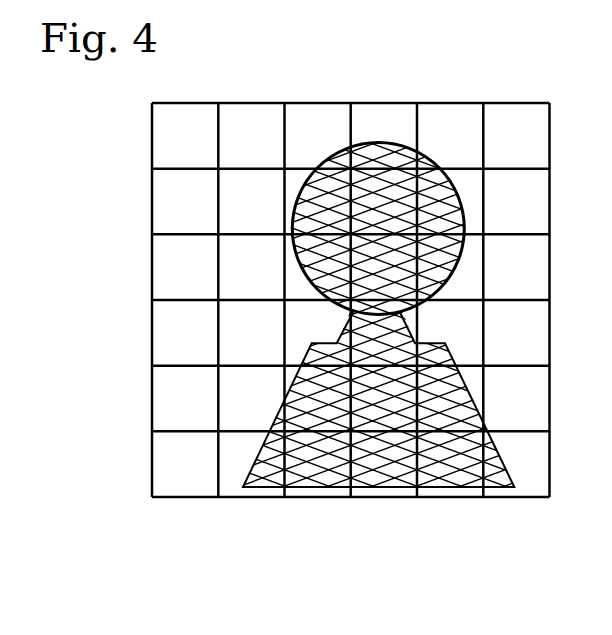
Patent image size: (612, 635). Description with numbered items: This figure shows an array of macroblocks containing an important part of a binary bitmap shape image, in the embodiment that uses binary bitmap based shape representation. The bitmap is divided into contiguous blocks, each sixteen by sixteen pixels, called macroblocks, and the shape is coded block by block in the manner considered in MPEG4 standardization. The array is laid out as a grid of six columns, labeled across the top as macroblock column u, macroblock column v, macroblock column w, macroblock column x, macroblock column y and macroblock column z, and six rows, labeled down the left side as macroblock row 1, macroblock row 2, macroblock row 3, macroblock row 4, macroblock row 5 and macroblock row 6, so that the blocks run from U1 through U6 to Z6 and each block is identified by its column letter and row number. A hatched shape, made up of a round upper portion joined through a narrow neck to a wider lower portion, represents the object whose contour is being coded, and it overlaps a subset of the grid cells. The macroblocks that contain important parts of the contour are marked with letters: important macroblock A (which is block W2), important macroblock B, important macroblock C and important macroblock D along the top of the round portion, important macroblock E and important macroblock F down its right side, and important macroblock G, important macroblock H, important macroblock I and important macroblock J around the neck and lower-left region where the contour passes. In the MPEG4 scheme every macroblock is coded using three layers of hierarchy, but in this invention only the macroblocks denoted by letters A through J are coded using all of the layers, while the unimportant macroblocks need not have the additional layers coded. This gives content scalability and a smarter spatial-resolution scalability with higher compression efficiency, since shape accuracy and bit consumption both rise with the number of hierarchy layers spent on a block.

The macroblock column u is at (185, 84).
The macroblock column v is at (252, 84).
The macroblock column w is at (317, 84).
The macroblock column x is at (384, 84).
The macroblock column y is at (450, 84).
The macroblock column z is at (516, 84).
The macroblock row 1 is at (133, 136).
The macroblock row 2 is at (133, 202).
The macroblock row 3 is at (133, 267).
The macroblock row 4 is at (133, 333).
The macroblock row 5 is at (133, 399).
The macroblock row 6 is at (133, 464).
The important macroblock A is at (295, 180).
The important macroblock B is at (318, 127).
The important macroblock C is at (385, 127).
The important macroblock D is at (450, 127).
The important macroblock E is at (471, 180).
The important macroblock F is at (468, 287).
The important macroblock G is at (452, 324).
The important macroblock H is at (383, 335).
The important macroblock I is at (305, 324).
The important macroblock J is at (294, 287).